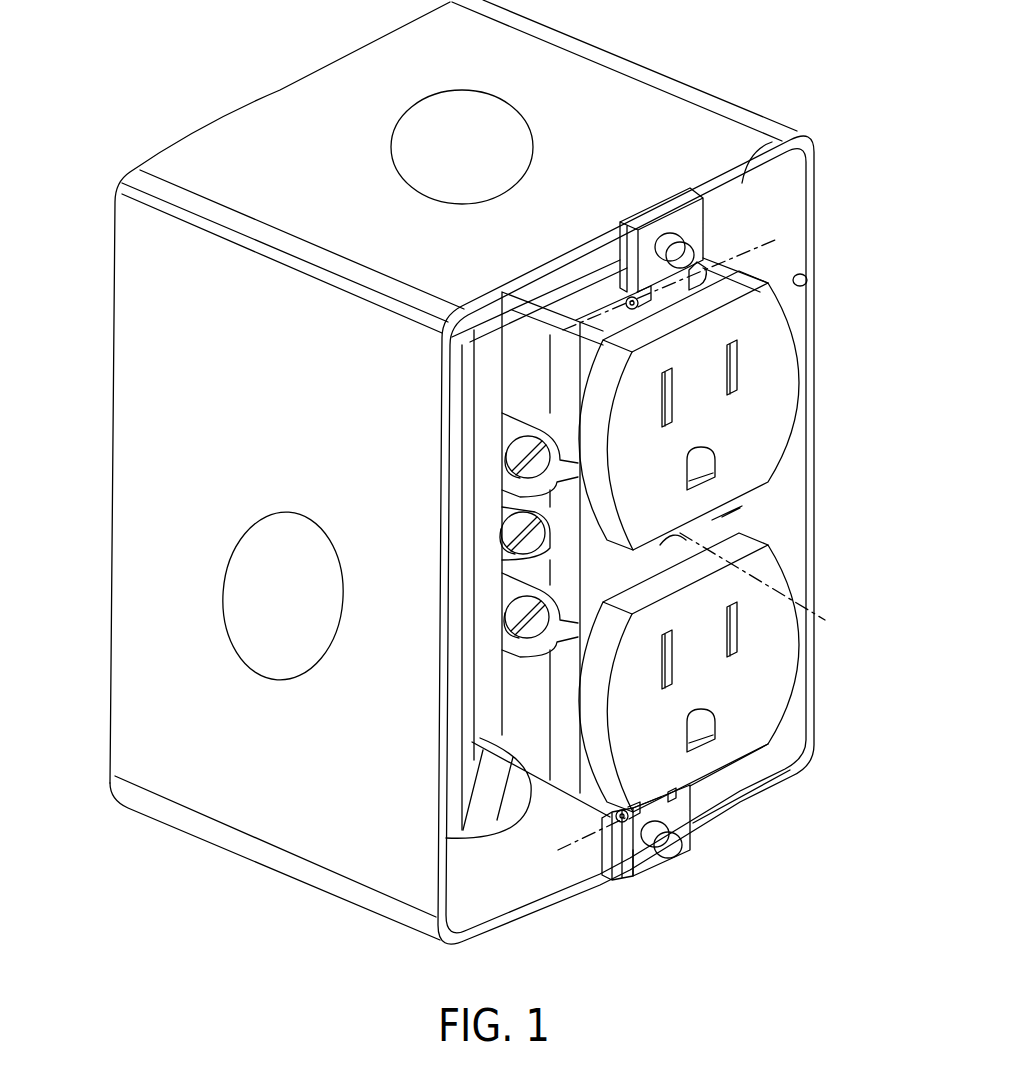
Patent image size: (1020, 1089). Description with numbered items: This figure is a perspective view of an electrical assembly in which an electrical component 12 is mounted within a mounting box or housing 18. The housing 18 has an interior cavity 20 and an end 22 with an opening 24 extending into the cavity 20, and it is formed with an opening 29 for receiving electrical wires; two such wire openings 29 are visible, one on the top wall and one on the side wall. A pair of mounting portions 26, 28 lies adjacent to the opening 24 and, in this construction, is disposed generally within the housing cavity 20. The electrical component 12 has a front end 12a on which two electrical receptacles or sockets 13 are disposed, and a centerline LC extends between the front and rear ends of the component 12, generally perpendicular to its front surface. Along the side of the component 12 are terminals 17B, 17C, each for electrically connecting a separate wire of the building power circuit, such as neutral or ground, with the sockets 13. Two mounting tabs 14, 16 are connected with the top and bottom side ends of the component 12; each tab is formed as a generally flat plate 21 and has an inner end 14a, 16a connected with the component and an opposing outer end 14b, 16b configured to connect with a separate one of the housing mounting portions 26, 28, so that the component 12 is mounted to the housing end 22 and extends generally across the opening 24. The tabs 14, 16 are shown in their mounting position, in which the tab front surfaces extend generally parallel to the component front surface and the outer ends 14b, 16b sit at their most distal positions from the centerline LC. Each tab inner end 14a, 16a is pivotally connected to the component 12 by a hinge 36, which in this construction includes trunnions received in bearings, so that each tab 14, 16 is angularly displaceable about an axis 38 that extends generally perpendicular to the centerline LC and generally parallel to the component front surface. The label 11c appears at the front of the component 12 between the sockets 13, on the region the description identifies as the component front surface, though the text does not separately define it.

The face bridge 11c is at (741, 507).
The electrical component 12 is at (462, 685).
The front end 12a is at (700, 527).
The electrical receptacle 13 is at (766, 408).
The mounting tab 14 is at (788, 199).
The inner end 14a is at (674, 311).
The outer end 14b is at (670, 214).
The mounting tab 16 is at (708, 862).
The inner end 16a is at (662, 803).
The outer end 16b is at (637, 862).
The terminal 17B is at (512, 452).
The terminal 17C is at (507, 528).
The mounting box 18 is at (102, 460).
The interior cavity 20 is at (781, 137).
The flat plate 21 is at (695, 820).
The end 22 is at (816, 342).
The opening 24 is at (808, 280).
The mounting portion 26 is at (614, 240).
The mounting portion 28 is at (601, 848).
The opening 29 is at (462, 92).
The hinge 36 is at (699, 292).
The axis 38 is at (738, 245).
The centerline LC is at (824, 618).